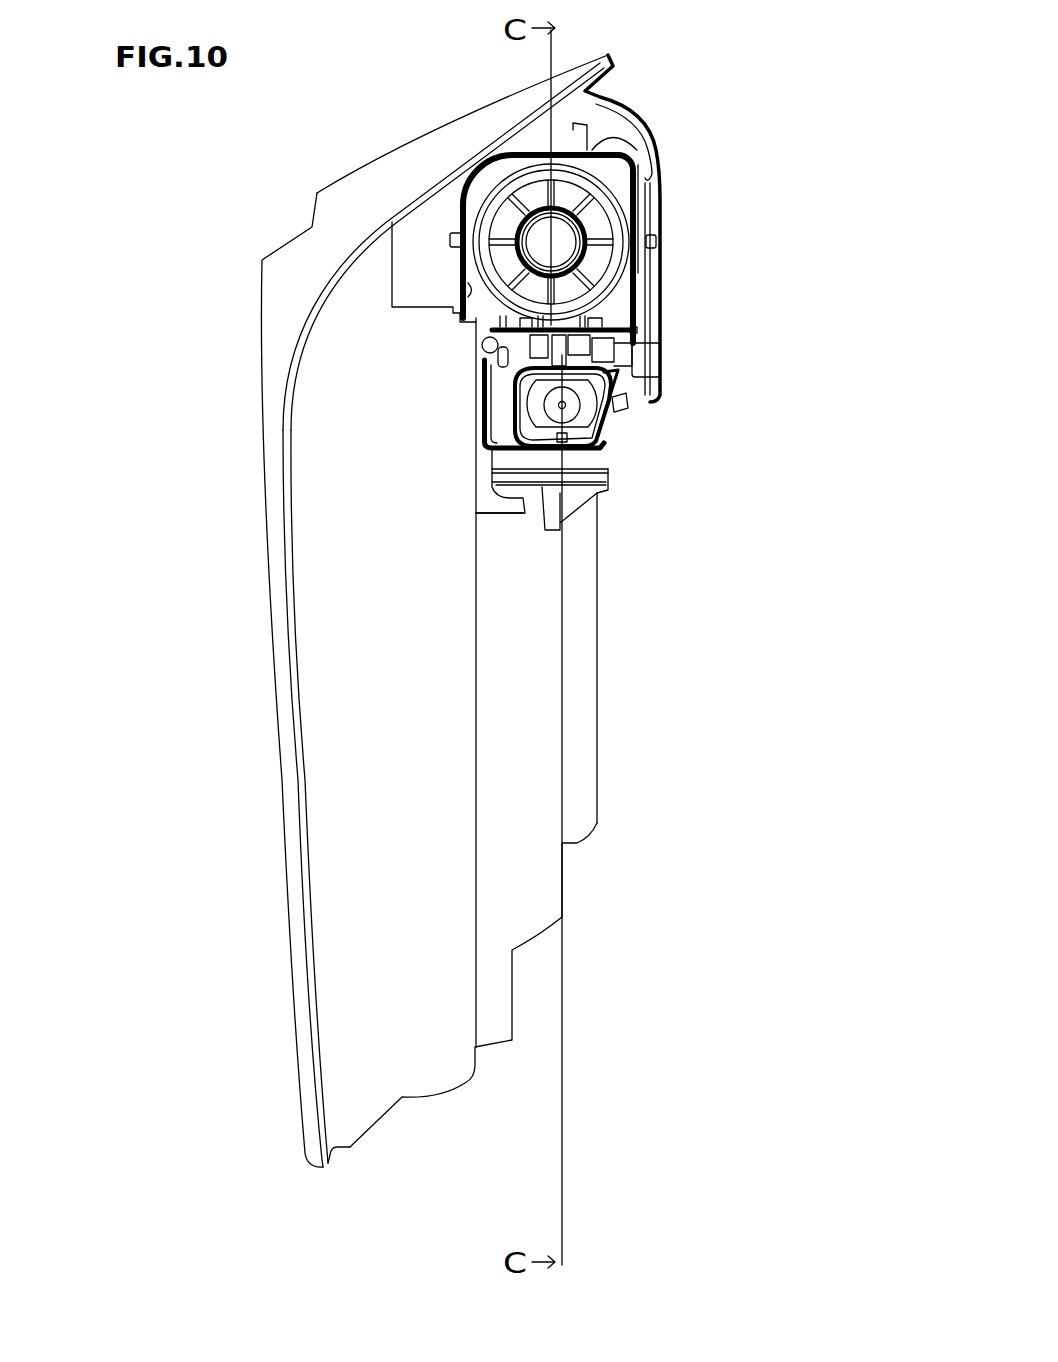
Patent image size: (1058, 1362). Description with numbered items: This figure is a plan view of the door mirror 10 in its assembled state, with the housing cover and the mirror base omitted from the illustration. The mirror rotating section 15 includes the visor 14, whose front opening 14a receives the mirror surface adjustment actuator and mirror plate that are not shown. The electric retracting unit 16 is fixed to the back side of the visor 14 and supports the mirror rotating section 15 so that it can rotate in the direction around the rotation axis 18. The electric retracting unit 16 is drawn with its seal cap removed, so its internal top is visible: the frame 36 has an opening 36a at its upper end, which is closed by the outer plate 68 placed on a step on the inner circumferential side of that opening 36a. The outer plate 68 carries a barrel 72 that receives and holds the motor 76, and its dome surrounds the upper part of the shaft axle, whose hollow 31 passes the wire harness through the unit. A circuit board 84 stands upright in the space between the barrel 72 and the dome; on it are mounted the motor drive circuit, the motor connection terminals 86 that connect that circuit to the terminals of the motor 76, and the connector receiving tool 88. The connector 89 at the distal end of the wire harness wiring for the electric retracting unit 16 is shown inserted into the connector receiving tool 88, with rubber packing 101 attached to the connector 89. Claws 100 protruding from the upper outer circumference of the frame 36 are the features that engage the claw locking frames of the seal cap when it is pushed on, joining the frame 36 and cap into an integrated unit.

The door mirror 10 is at (700, 103).
The visor 14 is at (327, 595).
The front opening 14a is at (350, 702).
The mirror rotating section 15 is at (250, 847).
The electric retracting unit 16 is at (669, 211).
The rotation axis 18 is at (528, 200).
The hollow 31 is at (552, 240).
The frame 36 is at (458, 243).
The opening 36a is at (470, 290).
The outer plate 68 is at (604, 222).
The barrel 72 is at (512, 403).
The motor 76 is at (543, 405).
The circuit board 84 is at (633, 330).
The motor connection terminals 86 is at (612, 437).
The connector receiving tool 88 is at (600, 366).
The connector 89 is at (610, 358).
The claws 100 is at (447, 240).
The rubber packing 101 is at (657, 357).